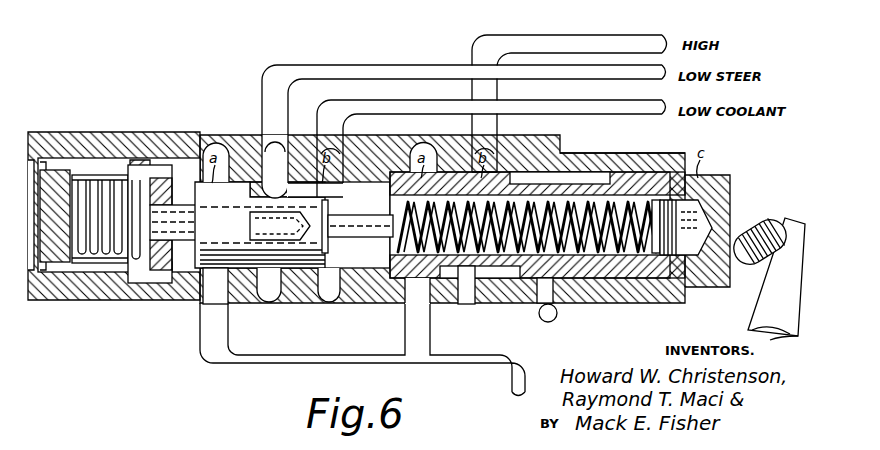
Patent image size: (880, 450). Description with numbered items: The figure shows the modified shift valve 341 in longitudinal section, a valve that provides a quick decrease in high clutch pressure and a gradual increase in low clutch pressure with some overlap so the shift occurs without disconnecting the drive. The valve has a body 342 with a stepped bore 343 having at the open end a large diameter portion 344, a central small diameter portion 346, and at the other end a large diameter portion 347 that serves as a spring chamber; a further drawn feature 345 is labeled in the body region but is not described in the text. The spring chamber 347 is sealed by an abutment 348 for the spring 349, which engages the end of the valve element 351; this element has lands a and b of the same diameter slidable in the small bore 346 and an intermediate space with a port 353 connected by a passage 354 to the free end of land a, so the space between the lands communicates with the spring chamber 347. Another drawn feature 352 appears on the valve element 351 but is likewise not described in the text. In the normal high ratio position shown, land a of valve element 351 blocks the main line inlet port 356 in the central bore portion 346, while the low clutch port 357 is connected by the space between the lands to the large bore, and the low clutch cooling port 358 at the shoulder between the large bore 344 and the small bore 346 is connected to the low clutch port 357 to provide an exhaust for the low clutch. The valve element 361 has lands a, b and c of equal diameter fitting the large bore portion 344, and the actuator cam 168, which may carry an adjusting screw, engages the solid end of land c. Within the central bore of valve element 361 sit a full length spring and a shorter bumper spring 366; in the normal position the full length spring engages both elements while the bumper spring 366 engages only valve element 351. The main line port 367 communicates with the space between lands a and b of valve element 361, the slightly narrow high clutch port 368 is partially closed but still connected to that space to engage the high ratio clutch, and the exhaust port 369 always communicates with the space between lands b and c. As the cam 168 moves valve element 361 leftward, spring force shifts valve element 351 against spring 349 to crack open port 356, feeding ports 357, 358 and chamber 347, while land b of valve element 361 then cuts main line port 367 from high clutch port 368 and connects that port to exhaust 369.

The modified shift valve 341 is at (188, 132).
The body 342 is at (95, 136).
The stepped bore 343 is at (360, 168).
The large diameter portion 344 is at (588, 172).
The port 345 is at (379, 166).
The central small diameter portion 346 is at (247, 153).
The large diameter portion providing a spring chamber 347 is at (137, 152).
The abutment 348 is at (42, 296).
The spring 349 is at (90, 296).
The valve element 351 is at (222, 306).
The valve piston 352 is at (158, 240).
The port 353 is at (620, 262).
The passage 354 is at (385, 164).
The main line inlet port 356 is at (201, 305).
The low clutch port 357 is at (266, 306).
The low clutch cooling port 358 is at (328, 306).
The valve element 361 is at (660, 282).
The bumper spring 366 is at (357, 239).
The main line port 367 is at (402, 305).
The high clutch port 368 is at (463, 306).
The exhaust port 369 is at (540, 320).
The actuator cam 168 is at (752, 336).